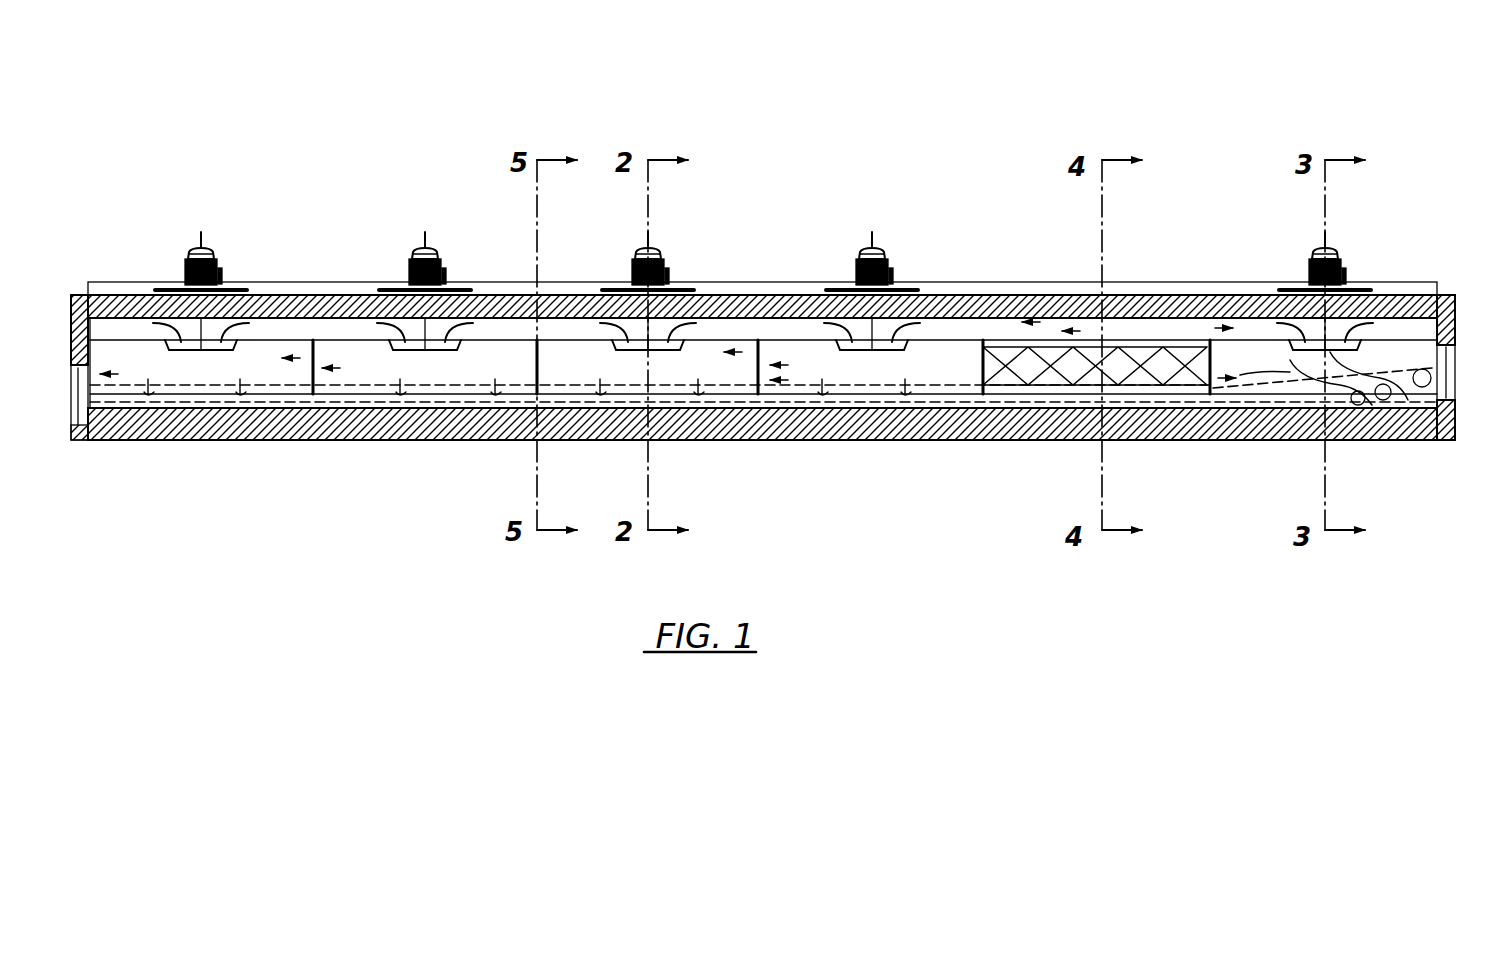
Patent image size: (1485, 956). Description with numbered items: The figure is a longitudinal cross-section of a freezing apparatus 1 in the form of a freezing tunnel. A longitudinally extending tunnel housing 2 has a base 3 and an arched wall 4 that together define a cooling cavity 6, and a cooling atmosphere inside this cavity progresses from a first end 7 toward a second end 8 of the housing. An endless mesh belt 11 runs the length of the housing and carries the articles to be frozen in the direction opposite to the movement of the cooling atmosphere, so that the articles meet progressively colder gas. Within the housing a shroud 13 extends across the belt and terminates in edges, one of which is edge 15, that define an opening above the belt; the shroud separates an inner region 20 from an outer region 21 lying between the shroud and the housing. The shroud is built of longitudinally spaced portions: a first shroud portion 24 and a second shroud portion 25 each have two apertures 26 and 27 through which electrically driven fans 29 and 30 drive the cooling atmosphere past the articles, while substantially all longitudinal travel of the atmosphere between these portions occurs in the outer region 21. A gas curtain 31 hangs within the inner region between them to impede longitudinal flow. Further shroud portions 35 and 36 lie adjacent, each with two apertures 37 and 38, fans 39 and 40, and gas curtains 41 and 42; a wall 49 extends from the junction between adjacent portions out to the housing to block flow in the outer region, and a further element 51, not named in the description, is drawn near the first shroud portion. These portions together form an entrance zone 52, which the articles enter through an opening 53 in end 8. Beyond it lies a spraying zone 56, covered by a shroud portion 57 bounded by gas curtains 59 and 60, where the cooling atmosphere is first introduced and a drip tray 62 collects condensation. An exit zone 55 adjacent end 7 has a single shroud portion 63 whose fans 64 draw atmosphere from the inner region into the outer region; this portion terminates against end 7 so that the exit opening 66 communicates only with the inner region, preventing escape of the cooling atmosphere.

The freezing apparatus 1 is at (677, 118).
The tunnel housing 2 is at (770, 228).
The base 3 is at (378, 418).
The arched wall 4 is at (1375, 332).
The cooling cavity 6 is at (930, 340).
The first end 7 is at (1445, 438).
The second end 8 is at (79, 440).
The endless mesh belt 11 is at (350, 388).
The shroud 13 is at (792, 340).
The edge 15 is at (893, 398).
The inner region 20 is at (136, 365).
The outer region 21 is at (280, 327).
The first shroud portion 24 is at (690, 374).
The second shroud portion 25 is at (448, 368).
The aperture 26 is at (612, 350).
The aperture 27 is at (450, 292).
The fan 29 is at (660, 285).
The fan 30 is at (426, 248).
The gas curtain 31 is at (533, 372).
The shroud portion 35 is at (855, 375).
The shroud portion 36 is at (208, 378).
The aperture 37 is at (876, 350).
The aperture 38 is at (222, 345).
The fan 39 is at (860, 275).
The fan 40 is at (206, 262).
The gas curtain 41 is at (758, 388).
The gas curtain 42 is at (311, 380).
The wall 49 is at (755, 340).
The partition 51 is at (305, 345).
The entrance zone 52 is at (474, 130).
The opening 53 is at (90, 392).
The exit zone 55 is at (1250, 190).
The spraying zone 56 is at (1013, 200).
The shroud portion 57 is at (1000, 350).
The gas curtain 59 is at (1222, 365).
The gas curtain 60 is at (972, 380).
The drip tray 62 is at (1058, 392).
The shroud portion 63 is at (1265, 375).
The fan 64 is at (1336, 262).
The opening 66 is at (1435, 400).